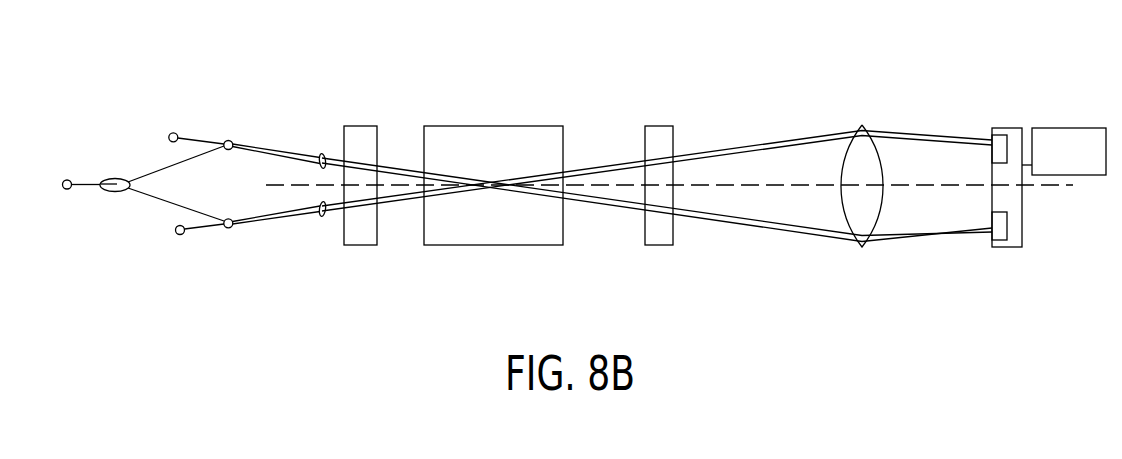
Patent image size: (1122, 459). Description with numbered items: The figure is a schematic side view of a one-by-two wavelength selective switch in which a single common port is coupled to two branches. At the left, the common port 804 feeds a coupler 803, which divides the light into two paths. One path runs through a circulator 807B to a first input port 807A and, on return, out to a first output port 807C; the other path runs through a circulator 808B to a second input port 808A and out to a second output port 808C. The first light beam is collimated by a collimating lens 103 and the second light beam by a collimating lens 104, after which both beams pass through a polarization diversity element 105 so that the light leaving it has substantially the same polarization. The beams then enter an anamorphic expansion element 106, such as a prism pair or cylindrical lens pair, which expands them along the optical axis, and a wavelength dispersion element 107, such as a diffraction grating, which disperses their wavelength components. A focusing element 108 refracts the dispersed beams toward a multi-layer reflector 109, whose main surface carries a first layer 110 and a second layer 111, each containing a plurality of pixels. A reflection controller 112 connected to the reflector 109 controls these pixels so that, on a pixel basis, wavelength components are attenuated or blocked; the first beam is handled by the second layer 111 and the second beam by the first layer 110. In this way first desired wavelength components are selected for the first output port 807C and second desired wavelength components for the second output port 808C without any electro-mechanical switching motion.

The coupler 803 is at (118, 190).
The single common output port 804 is at (66, 180).
The first input port 807A is at (168, 166).
The circulator 807B is at (226, 140).
The first output port 807C is at (172, 132).
The second input port 808A is at (186, 208).
The circulator 808B is at (226, 228).
The second output port 808C is at (180, 234).
The collimating lens 103 is at (322, 153).
The collimating lens 104 is at (320, 216).
The polarization diversity element 105 is at (367, 125).
The anamorphic expansion element 106 is at (525, 125).
The wavelength dispersion element 107 is at (662, 125).
The focusing element 108 is at (861, 125).
The multi-layer reflector 109 is at (1012, 131).
The first layer 110 is at (997, 140).
The second layer 111 is at (998, 233).
The reflection controller 112 is at (1060, 127).